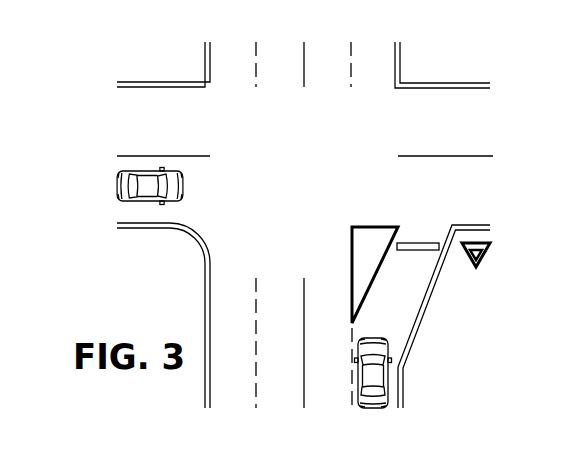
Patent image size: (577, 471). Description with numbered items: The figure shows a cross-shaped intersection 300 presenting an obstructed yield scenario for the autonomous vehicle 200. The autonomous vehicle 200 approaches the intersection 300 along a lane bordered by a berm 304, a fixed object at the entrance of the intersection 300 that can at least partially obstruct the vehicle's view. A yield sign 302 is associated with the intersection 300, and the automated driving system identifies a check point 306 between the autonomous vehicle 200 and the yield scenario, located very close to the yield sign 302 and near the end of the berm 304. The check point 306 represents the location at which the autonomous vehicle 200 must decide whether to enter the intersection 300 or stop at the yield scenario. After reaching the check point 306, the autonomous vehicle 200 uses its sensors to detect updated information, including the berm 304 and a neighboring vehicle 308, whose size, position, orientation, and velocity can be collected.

The cross-shaped intersection 300 is at (414, 77).
The neighboring vehicle 308 is at (147, 172).
The berm 304 is at (374, 226).
The check point 306 is at (418, 243).
The yield sign 302 is at (490, 250).
The autonomous vehicle 200 is at (388, 380).